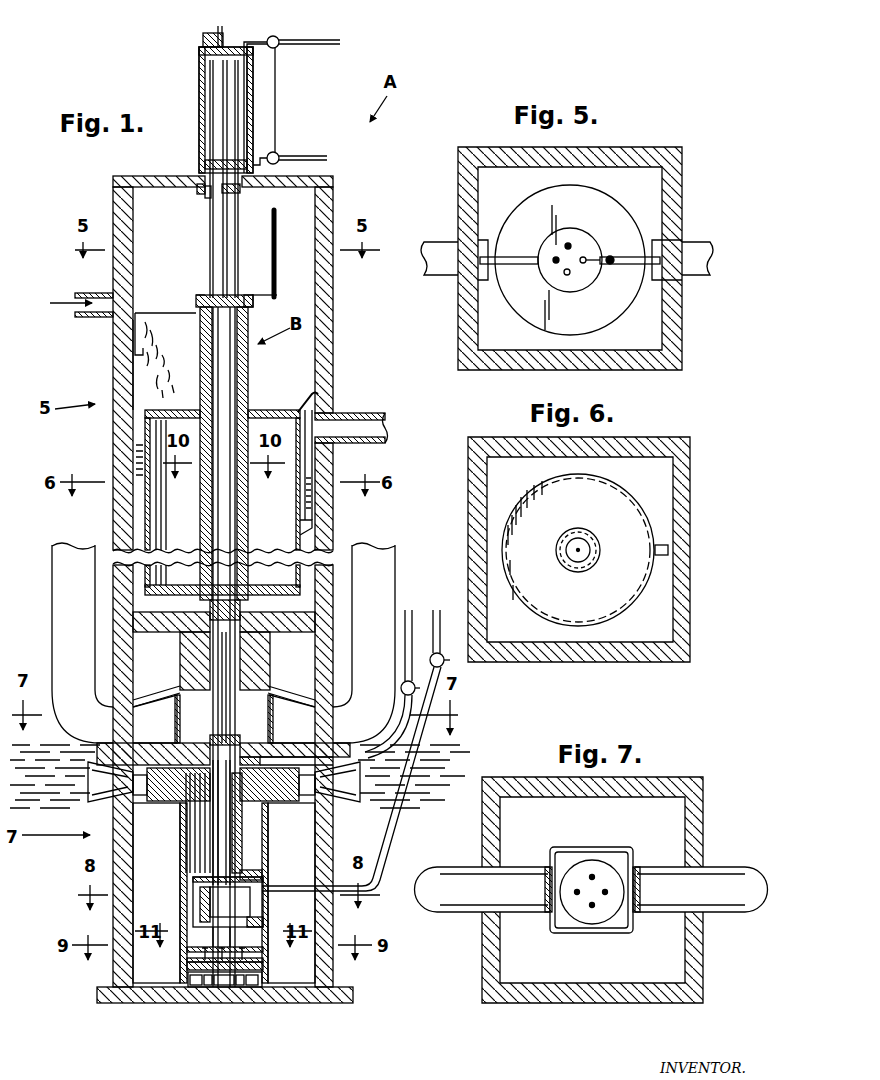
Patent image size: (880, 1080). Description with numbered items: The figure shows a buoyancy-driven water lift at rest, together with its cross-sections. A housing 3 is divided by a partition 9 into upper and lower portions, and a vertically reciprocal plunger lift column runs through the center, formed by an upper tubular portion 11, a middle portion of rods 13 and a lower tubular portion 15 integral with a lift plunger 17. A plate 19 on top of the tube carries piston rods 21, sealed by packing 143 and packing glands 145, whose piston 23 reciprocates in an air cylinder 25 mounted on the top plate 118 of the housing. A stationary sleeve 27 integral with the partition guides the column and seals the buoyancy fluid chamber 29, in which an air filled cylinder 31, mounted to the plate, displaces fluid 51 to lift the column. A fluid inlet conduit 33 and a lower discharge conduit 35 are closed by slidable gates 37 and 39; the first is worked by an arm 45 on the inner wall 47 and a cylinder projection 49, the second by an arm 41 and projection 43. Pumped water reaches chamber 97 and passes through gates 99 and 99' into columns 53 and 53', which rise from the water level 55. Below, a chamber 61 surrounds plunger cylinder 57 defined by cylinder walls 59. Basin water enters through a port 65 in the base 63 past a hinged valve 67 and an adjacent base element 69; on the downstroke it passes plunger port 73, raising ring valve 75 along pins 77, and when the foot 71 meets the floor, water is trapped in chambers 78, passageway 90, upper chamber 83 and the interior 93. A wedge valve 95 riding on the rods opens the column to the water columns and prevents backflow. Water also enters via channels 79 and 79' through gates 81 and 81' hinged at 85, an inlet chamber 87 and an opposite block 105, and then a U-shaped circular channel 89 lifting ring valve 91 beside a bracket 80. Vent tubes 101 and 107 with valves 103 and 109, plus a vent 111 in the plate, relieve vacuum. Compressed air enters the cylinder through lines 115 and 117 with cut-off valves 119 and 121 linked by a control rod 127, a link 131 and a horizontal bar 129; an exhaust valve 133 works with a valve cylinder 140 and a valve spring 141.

In FIG. 1, the housing 3 is at (113, 203).
In FIG. 1, the partition 9 is at (305, 625).
In FIG. 1, the upper tubular portion 11 is at (236, 367).
In FIG. 6, the upper tubular portion 11 is at (570, 560).
In FIG. 1, the rods 13 is at (232, 690).
In FIG. 7, the rods 13 is at (588, 906).
In FIG. 1, the lower tubular portion 15 is at (234, 830).
In FIG. 1, the lift plunger 17 is at (193, 900).
In FIG. 1, the plate 19 is at (250, 306).
In FIG. 5, the plate 19 is at (590, 248).
In FIG. 1, the piston rods 21 is at (212, 240).
In FIG. 5, the piston rods 21 is at (566, 276).
In FIG. 1, the piston 23 is at (205, 165).
In FIG. 1, the air cylinder 25 is at (199, 102).
In FIG. 1, the stationary sleeve 27 is at (248, 390).
In FIG. 6, the stationary sleeve 27 is at (588, 570).
In FIG. 1, the buoyancy fluid chamber 29 is at (140, 388).
In FIG. 5, the buoyancy fluid chamber 29 is at (495, 175).
In FIG. 6, the buoyancy fluid chamber 29 is at (660, 610).
In FIG. 1, the air filled cylinder 31 is at (160, 485).
In FIG. 5, the air filled cylinder 31 is at (598, 200).
In FIG. 6, the air filled cylinder 31 is at (628, 500).
In FIG. 1, the fluid inlet conduit 33 is at (95, 317).
In FIG. 5, the fluid inlet conduit 33 is at (440, 276).
In FIG. 1, the fluid discharge conduit 35 is at (362, 413).
In FIG. 5, the fluid discharge conduit 35 is at (710, 246).
In FIG. 1, the slidable gate 37 is at (135, 354).
In FIG. 5, the slidable gate 37 is at (488, 275).
In FIG. 1, the slidable gate 39 is at (312, 455).
In FIG. 5, the slidable gate 39 is at (662, 242).
In FIG. 1, the arm 41 is at (308, 392).
In FIG. 5, the arm 41 is at (657, 280).
In FIG. 1, the projection 43 is at (312, 522).
In FIG. 6, the projection 43 is at (668, 550).
In FIG. 1, the arm 45 is at (163, 313).
In FIG. 5, the arm 45 is at (515, 257).
In FIG. 1, the inner wall 47 is at (200, 353).
In FIG. 6, the inner wall 47 is at (600, 545).
In FIG. 1, the cylinder projection 49 is at (145, 424).
In FIG. 1, the fluid 51 is at (140, 498).
In FIG. 1, the column 53 is at (64, 643).
In FIG. 7, the column 53 is at (701, 872).
In FIG. 1, the column 53' is at (383, 643).
In FIG. 1, the water level 55 is at (251, 762).
In FIG. 7, the water level 55 is at (463, 867).
In FIG. 1, the plunger cylinder 57 is at (195, 845).
In FIG. 1, the cylinder walls 59 is at (182, 870).
In FIG. 1, the chamber 61 is at (320, 980).
In FIG. 1, the base 63 is at (262, 993).
In FIG. 1, the port 65 is at (223, 992).
In FIG. 1, the hinged valve 67 is at (240, 990).
In FIG. 1, the base fitting 69 is at (252, 990).
In FIG. 1, the foot 71 is at (195, 990).
In FIG. 1, the plunger port 73 is at (212, 990).
In FIG. 1, the ring valve 75 is at (195, 966).
In FIG. 1, the pins 77 is at (250, 968).
In FIG. 1, the chambers 78 is at (200, 955).
In FIG. 1, the channel 79 is at (70, 782).
In FIG. 1, the channel 79' is at (353, 783).
In FIG. 1, the bracket 80 is at (263, 920).
In FIG. 1, the gate 81 is at (171, 784).
In FIG. 1, the gate 81' is at (309, 799).
In FIG. 1, the upper chamber 83 is at (200, 908).
In FIG. 1, the hinge 85 is at (128, 750).
In FIG. 1, the inlet chamber 87 is at (175, 805).
In FIG. 1, the U-shaped circular channel 89 is at (253, 872).
In FIG. 1, the passageway 90 is at (246, 952).
In FIG. 1, the ring valve 91 is at (230, 902).
In FIG. 1, the interior 93 is at (242, 840).
In FIG. 1, the wedge valve 95 is at (205, 740).
In FIG. 7, the wedge valve 95 is at (603, 916).
In FIG. 1, the chamber 97 is at (250, 666).
In FIG. 7, the chamber 97 is at (615, 850).
In FIG. 1, the gate 99 is at (156, 714).
In FIG. 7, the gate 99 is at (659, 889).
In FIG. 1, the gate 99' is at (291, 714).
In FIG. 7, the gate 99' is at (527, 889).
In FIG. 1, the tube 101 is at (412, 617).
In FIG. 1, the valve 103 is at (400, 681).
In FIG. 1, the block 105 is at (291, 893).
In FIG. 1, the tube 107 is at (440, 627).
In FIG. 1, the valve 109 is at (447, 664).
In FIG. 1, the vent 111 is at (205, 297).
In FIG. 1, the air line 115 is at (300, 158).
In FIG. 1, the air line 117 is at (300, 46).
In FIG. 1, the top plate 118 is at (133, 177).
In FIG. 1, the cut-off valve 119 is at (278, 154).
In FIG. 1, the cut-off valve 121 is at (279, 40).
In FIG. 1, the control rod 127 is at (276, 112).
In FIG. 1, the horizontal bar 129 is at (255, 295).
In FIG. 5, the horizontal bar 129 is at (585, 264).
In FIG. 1, the link 131 is at (278, 256).
In FIG. 5, the link 131 is at (611, 265).
In FIG. 1, the exhaust valve 133 is at (238, 193).
In FIG. 1, the valve cylinder 140 is at (203, 40).
In FIG. 1, the valve spring 141 is at (222, 40).
In FIG. 1, the packing 143 is at (200, 190).
In FIG. 1, the packing gland 145 is at (210, 197).